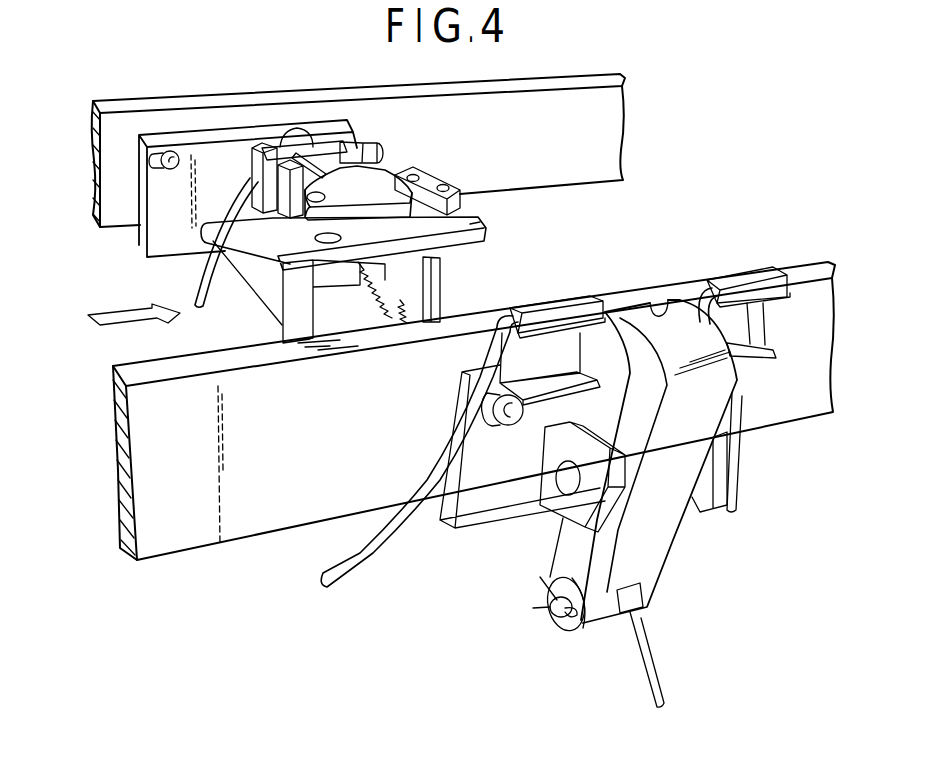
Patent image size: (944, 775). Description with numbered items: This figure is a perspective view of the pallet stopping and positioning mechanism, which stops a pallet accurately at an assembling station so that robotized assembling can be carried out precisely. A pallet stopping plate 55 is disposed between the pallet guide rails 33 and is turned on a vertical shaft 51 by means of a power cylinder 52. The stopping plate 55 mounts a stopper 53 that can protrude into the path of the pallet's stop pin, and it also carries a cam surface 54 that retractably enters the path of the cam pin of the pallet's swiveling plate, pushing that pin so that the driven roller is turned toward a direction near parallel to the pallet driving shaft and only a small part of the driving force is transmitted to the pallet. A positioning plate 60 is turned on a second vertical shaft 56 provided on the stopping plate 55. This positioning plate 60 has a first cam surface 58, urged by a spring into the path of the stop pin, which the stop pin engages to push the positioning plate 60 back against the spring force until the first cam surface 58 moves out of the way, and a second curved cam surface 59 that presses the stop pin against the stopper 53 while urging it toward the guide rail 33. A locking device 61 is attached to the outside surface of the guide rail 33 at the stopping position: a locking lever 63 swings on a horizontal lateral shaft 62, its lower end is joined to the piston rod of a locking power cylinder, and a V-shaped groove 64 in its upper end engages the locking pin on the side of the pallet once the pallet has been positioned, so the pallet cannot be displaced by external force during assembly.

The pallet guide rail 33 is at (261, 97).
The vertical shaft 51 is at (280, 253).
The power cylinder 52 is at (303, 140).
The stopper 53 is at (447, 175).
The cam surface 54 is at (457, 237).
The pallet stopping plate 55 is at (481, 224).
The vertical shaft 56 is at (204, 247).
The first cam surface 58 is at (415, 220).
The second curved cam surface 59 is at (386, 178).
The positioning plate 60 is at (268, 137).
The locking device 61 is at (538, 544).
The horizontal lateral shaft 62 is at (566, 478).
The locking lever 63 is at (700, 410).
The V-shaped groove 64 is at (658, 305).